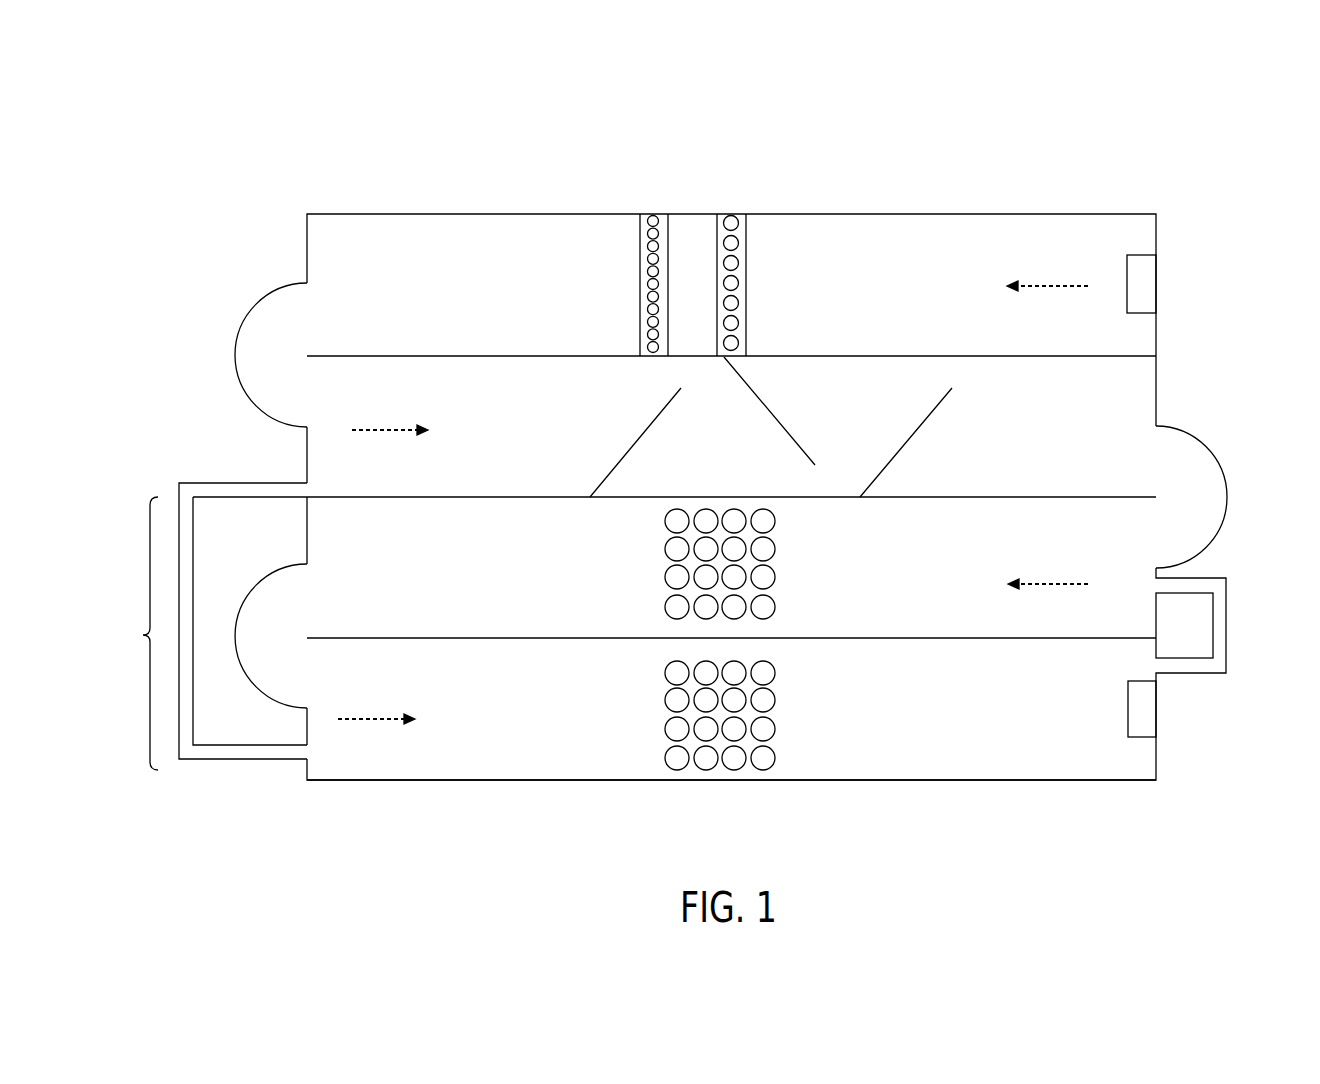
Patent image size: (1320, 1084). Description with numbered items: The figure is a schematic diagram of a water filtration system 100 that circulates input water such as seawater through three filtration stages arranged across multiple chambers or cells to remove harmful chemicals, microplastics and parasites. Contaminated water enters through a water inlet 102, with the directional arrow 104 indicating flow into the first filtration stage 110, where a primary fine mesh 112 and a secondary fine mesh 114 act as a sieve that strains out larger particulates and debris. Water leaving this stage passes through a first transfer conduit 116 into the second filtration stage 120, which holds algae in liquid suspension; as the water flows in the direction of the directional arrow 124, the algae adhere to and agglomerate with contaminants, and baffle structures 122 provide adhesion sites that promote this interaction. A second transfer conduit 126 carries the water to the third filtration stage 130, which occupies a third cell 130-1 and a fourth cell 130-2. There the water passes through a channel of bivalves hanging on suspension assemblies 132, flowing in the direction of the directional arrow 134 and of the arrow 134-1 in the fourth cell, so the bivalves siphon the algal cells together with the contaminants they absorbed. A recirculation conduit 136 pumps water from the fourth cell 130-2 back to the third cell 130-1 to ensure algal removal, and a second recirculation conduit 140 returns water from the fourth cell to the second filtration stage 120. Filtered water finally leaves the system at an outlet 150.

The water filtration system 100 is at (1106, 147).
The water inlet 102 is at (1153, 283).
The directional arrow 104 is at (1046, 285).
The first filtration stage 110 is at (491, 289).
The primary fine mesh 112 is at (730, 215).
The secondary fine mesh 114 is at (652, 215).
The first transfer conduit 116 is at (287, 365).
The second filtration stage 120 is at (501, 442).
The baffle structures 122 is at (642, 433).
The directional arrow 124 is at (380, 430).
The second transfer conduit 126 is at (1212, 505).
The third filtration stage 130 is at (133, 633).
The third cell 130-1 is at (527, 587).
The fourth cell 130-2 is at (527, 720).
The suspension assemblies 132 is at (772, 570).
The directional arrow 134 is at (1046, 583).
The air flow 134-1 is at (367, 718).
The recirculation conduit 136 is at (289, 649).
The second recirculation conduit 140 is at (253, 757).
The outlet 150 is at (1156, 722).